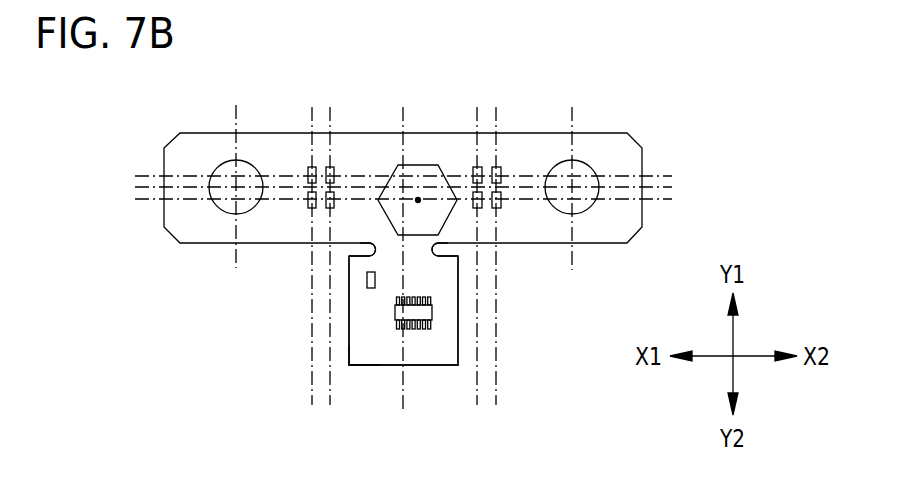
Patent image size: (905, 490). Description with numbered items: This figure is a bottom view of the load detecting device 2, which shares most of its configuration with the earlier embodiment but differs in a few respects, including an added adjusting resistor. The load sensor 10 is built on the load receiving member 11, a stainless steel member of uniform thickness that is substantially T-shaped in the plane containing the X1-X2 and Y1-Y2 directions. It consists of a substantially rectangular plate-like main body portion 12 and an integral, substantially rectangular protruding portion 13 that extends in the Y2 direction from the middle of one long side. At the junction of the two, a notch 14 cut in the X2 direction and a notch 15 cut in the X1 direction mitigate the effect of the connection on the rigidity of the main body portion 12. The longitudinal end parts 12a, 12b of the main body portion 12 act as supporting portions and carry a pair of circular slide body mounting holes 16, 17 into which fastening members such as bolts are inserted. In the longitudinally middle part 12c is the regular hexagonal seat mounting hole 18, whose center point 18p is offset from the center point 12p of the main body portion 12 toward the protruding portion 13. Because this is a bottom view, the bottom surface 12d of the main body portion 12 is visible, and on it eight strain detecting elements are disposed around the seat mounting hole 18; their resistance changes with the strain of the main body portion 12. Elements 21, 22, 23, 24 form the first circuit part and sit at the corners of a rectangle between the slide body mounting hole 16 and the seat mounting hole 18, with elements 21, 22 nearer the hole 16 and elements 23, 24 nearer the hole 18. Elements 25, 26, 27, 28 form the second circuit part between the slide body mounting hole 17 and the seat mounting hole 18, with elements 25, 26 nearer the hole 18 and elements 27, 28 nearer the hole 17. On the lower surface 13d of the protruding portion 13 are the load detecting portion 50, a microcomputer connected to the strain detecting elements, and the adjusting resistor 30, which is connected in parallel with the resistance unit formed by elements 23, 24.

The load detecting device 2 is at (268, 270).
The load sensor 10 is at (197, 244).
The load receiving member 11 is at (180, 234).
The main body portion 12 is at (178, 137).
The longitudinal end part 12a is at (213, 234).
The longitudinal end part 12b is at (607, 233).
The longitudinally middle part 12c is at (395, 152).
The bottom surface 12d is at (630, 162).
The center point 12p is at (397, 183).
The protruding portion 13 is at (354, 324).
The lower surface 13d is at (361, 348).
The notch 14 is at (347, 254).
The notch 15 is at (448, 252).
The slide body mounting hole 16 is at (217, 164).
The slide body mounting hole 17 is at (582, 164).
The seat mounting hole 18 is at (418, 166).
The center point 18p is at (419, 199).
The strain detecting element 21 is at (307, 197).
The strain detecting element 22 is at (307, 173).
The strain detecting element 23 is at (327, 167).
The strain detecting element 24 is at (334, 197).
The strain detecting element 25 is at (474, 193).
The strain detecting element 26 is at (473, 173).
The strain detecting element 27 is at (501, 167).
The strain detecting element 28 is at (502, 197).
The adjusting resistor 30 is at (365, 282).
The load detecting portion 50 is at (423, 312).